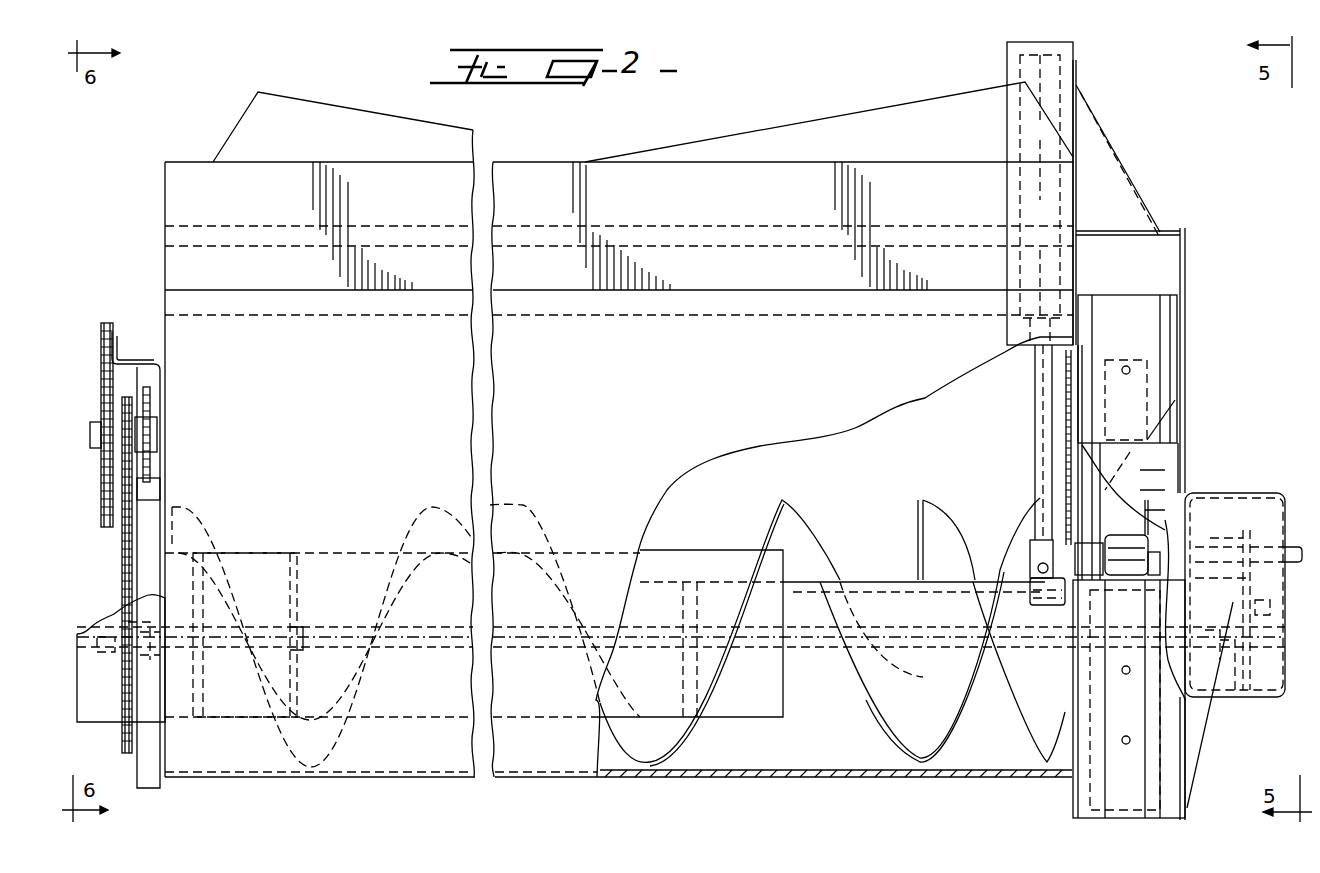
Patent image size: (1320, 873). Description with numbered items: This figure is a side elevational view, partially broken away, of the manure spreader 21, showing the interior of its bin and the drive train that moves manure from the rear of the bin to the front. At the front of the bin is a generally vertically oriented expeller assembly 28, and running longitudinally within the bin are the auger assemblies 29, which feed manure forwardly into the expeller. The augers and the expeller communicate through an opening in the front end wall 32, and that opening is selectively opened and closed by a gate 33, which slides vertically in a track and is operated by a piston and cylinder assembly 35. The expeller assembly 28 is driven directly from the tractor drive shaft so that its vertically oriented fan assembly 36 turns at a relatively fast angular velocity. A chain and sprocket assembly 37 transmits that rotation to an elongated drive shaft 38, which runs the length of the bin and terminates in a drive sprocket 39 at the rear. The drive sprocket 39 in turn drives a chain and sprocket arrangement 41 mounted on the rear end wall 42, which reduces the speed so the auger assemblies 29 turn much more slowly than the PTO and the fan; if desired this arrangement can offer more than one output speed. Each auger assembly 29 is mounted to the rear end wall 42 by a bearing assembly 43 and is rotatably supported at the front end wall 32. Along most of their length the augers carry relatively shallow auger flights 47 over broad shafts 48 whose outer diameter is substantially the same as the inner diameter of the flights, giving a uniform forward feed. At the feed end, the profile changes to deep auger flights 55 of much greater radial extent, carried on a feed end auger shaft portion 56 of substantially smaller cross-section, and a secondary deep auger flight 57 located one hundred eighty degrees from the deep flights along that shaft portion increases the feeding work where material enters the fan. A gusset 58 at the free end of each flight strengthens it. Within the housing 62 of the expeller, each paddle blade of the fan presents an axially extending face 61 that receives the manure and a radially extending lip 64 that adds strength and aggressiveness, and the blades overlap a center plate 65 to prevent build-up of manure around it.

The manure spreader 21 is at (161, 204).
The expeller assembly 28 is at (1192, 440).
The auger assemblies 29 is at (768, 500).
The front end wall 32 is at (1076, 205).
The gate 33 is at (1047, 395).
The piston and cylinder assembly 35 is at (1048, 86).
The fan assembly 36 is at (1133, 708).
The chain and sprocket assembly 37 is at (1280, 588).
The elongated drive shaft 38 is at (818, 643).
The drive sprocket 39 is at (105, 628).
The chain and sprocket arrangement 41 is at (110, 320).
The rear end wall 42 is at (153, 346).
The bearing assembly 43 is at (165, 590).
The shallow auger flights 47 is at (436, 507).
The shafts 48 is at (356, 548).
The deep auger flights 55 is at (893, 723).
The feed end auger shaft portion 56 is at (873, 582).
The secondary deep auger flight 57 is at (1019, 712).
The gusset 58 is at (917, 520).
The face 61 is at (1129, 556).
The housing 62 is at (1172, 262).
The lip 64 is at (1077, 295).
The center plate 65 is at (1117, 555).